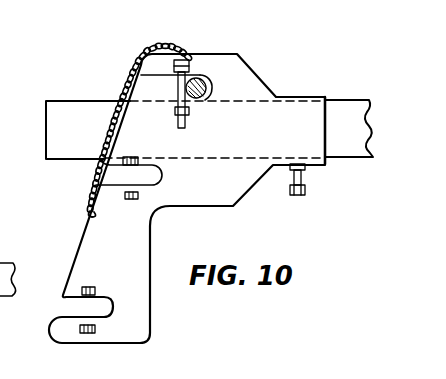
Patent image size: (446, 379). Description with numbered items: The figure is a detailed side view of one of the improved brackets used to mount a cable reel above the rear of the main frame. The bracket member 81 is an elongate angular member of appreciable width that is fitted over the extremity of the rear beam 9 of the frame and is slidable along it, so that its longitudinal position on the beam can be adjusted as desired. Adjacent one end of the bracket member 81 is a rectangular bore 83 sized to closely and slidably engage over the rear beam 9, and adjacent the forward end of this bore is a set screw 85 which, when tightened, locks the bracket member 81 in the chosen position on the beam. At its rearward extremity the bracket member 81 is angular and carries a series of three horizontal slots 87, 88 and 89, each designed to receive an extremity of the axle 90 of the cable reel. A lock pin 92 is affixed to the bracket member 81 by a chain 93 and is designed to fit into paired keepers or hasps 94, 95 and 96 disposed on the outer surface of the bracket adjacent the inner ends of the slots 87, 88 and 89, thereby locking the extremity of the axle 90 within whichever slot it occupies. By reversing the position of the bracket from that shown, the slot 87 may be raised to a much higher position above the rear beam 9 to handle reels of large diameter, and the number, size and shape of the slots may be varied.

The rear beam 9 is at (346, 115).
The bracket member 81 is at (137, 237).
The rectangular bore 83 is at (300, 117).
The set screw 85 is at (298, 190).
The horizontal slot 87 is at (100, 312).
The horizontal slot 88 is at (138, 177).
The horizontal slot 89 is at (143, 88).
The axle 90 is at (210, 86).
The lock pin 92 is at (182, 90).
The chain 93 is at (128, 70).
The keeper 94 is at (190, 109).
The keeper 95 is at (140, 194).
The keeper 96 is at (96, 327).